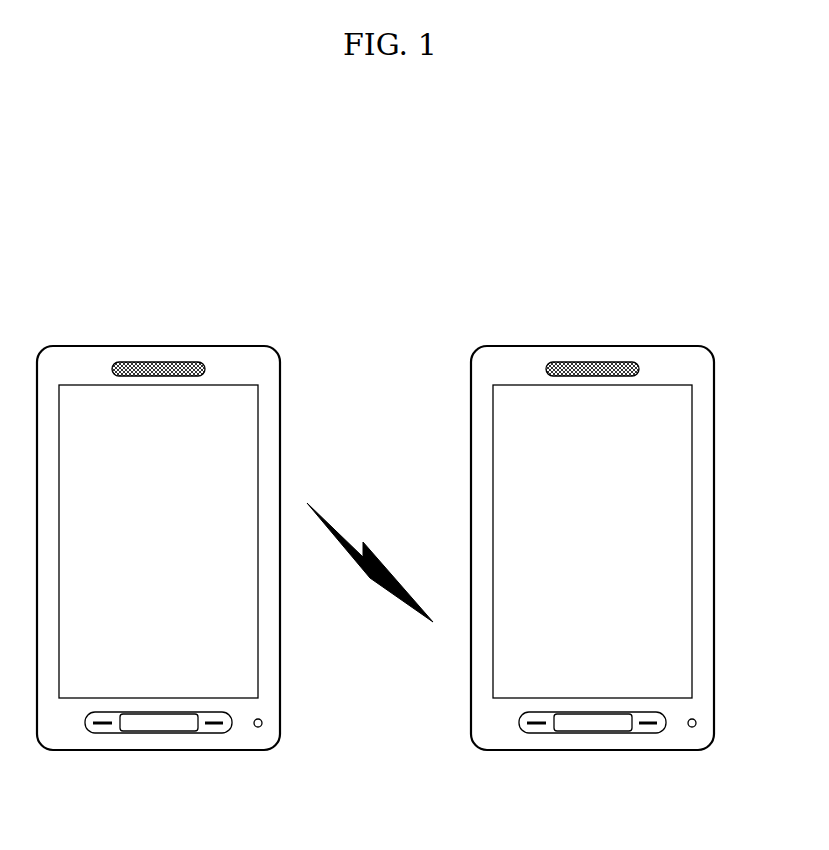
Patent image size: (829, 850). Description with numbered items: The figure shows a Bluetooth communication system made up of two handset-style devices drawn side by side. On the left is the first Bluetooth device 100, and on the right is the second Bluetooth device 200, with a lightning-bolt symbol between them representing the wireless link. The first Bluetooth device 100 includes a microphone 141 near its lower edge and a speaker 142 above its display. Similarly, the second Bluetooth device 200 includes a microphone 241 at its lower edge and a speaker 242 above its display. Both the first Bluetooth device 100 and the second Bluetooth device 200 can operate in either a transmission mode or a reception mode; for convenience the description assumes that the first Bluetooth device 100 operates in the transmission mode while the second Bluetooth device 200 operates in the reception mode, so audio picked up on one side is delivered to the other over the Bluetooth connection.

The first Bluetooth device 100 is at (251, 338).
The second Bluetooth device 200 is at (685, 338).
The microphone 141 is at (256, 729).
The speaker 142 is at (167, 356).
The microphone 241 is at (690, 729).
The speaker 242 is at (601, 356).